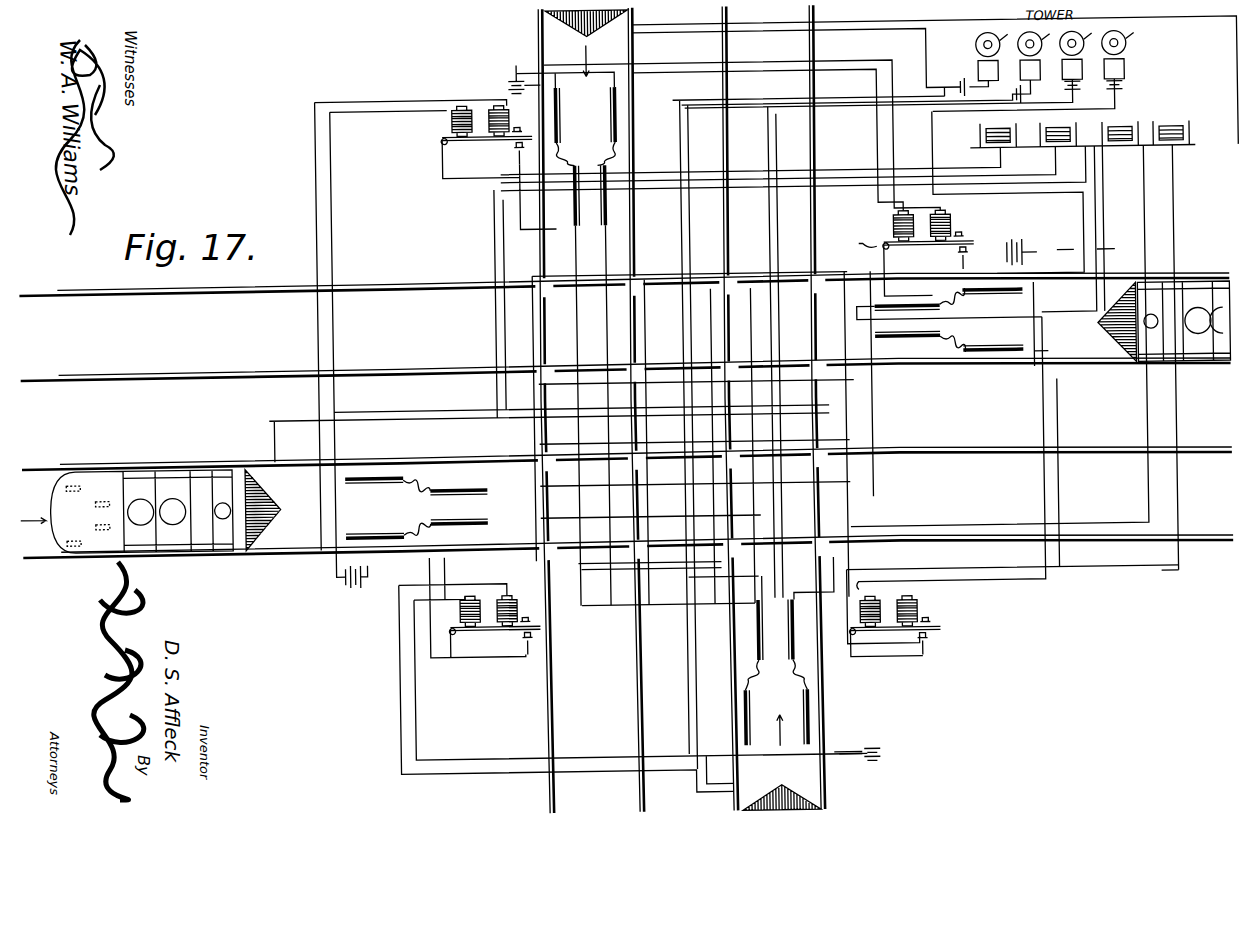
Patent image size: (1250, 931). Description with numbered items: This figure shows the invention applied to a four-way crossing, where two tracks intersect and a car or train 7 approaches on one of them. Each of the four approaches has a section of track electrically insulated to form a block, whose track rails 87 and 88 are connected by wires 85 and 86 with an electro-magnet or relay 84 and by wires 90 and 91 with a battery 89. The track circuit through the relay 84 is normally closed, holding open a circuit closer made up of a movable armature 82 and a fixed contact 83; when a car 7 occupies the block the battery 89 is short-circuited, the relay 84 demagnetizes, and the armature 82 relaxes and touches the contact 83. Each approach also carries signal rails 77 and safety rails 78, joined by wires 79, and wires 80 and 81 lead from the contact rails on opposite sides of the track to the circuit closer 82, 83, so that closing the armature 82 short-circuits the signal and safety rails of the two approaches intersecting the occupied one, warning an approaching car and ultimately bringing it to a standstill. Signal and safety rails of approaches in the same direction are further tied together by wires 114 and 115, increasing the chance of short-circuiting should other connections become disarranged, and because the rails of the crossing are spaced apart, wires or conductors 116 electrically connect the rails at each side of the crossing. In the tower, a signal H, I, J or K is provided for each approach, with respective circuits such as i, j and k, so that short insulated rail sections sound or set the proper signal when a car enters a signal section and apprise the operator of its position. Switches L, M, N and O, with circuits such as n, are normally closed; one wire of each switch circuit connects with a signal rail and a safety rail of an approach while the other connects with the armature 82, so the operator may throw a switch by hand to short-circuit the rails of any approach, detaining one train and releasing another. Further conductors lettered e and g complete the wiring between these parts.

The car 7 is at (820, 798).
The signal rails 77 is at (802, 707).
The safety rails 78 is at (774, 634).
The wires 79 is at (420, 499).
The wire 80 is at (862, 241).
The wire 81 is at (908, 270).
The armature 82 is at (881, 631).
The contact 83 is at (924, 641).
The relay or electro-magnet 84 is at (919, 612).
The wire 85 is at (1062, 444).
The wire 86 is at (1040, 490).
The track rail 87 is at (728, 707).
The track rail 88 is at (816, 703).
The battery 89 is at (874, 759).
The wire 90 is at (843, 776).
The wire 91 is at (854, 748).
The wire 114 is at (655, 607).
The wire 115 is at (665, 612).
The wires or conductors 116 is at (769, 560).
The wire e is at (844, 181).
The wire g is at (1166, 529).
The signal circuit i is at (686, 720).
The signal circuit j is at (276, 432).
The signal circuit k is at (768, 34).
The switch circuit n is at (470, 327).
The signal H is at (977, 56).
The signal I is at (1025, 56).
The signal J is at (1067, 55).
The signal K is at (1110, 54).
The switch L is at (1073, 135).
The switch M is at (1046, 131).
The switch N is at (1107, 130).
The switch O is at (1171, 124).